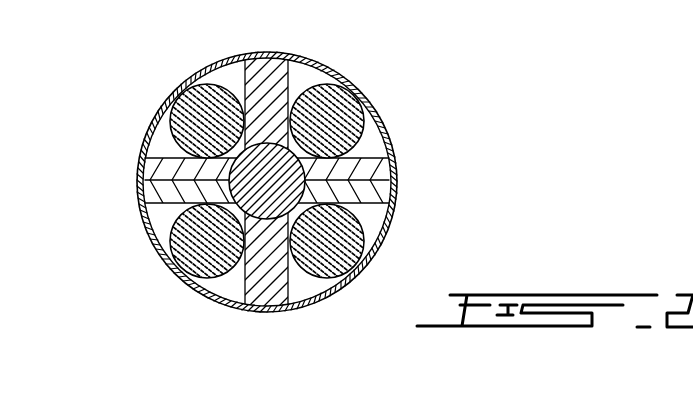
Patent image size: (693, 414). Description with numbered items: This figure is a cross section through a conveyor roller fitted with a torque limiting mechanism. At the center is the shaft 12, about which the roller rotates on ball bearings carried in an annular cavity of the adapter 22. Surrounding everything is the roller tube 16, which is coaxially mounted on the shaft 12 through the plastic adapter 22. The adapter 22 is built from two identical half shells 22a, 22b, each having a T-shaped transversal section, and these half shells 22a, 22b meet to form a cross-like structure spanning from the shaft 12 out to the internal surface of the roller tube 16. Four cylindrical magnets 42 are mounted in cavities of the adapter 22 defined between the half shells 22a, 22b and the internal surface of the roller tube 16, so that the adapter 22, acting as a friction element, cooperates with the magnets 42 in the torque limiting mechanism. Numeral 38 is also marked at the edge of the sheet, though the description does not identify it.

The shaft 12 is at (172, 196).
The roller tube 16 is at (387, 133).
The adapter 22 is at (360, 172).
The half shell 22a is at (273, 85).
The half shell 22b is at (265, 280).
The lumen 38 is at (66, 10).
The cylindrical magnets 42 is at (203, 100).